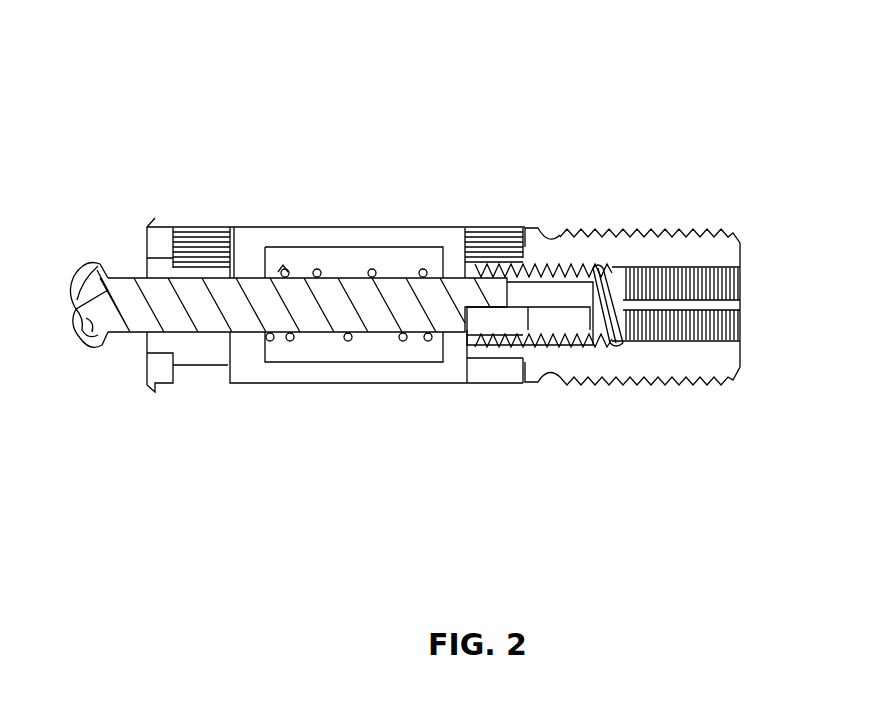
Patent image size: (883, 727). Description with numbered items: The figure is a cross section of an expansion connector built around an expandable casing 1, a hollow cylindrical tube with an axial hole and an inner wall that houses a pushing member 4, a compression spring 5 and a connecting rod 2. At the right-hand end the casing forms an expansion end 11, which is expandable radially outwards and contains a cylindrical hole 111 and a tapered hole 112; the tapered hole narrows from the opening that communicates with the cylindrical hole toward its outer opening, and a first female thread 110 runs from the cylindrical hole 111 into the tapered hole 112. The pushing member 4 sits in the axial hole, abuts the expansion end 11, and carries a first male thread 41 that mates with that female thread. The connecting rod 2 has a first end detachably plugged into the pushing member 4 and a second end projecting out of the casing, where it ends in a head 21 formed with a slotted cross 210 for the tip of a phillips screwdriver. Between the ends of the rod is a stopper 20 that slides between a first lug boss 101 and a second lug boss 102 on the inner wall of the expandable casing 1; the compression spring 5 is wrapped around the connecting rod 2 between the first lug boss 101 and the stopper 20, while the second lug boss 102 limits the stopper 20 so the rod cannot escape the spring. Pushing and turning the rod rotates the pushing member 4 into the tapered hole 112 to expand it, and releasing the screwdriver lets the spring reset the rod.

The expandable casing 1 is at (355, 237).
The first lug boss 101 is at (452, 262).
The second lug boss 102 is at (240, 262).
The connecting rod 2 is at (151, 310).
The head 21 is at (96, 262).
The slotted cross 210 is at (88, 338).
The stopper 20 is at (265, 337).
The compression spring 5 is at (348, 333).
The pushing member 4 is at (550, 257).
The first male thread 41 is at (588, 263).
The expansion end 11 is at (645, 250).
The first female thread 110 is at (700, 273).
The cylindrical hole 111 is at (560, 350).
The tapered hole 112 is at (662, 345).